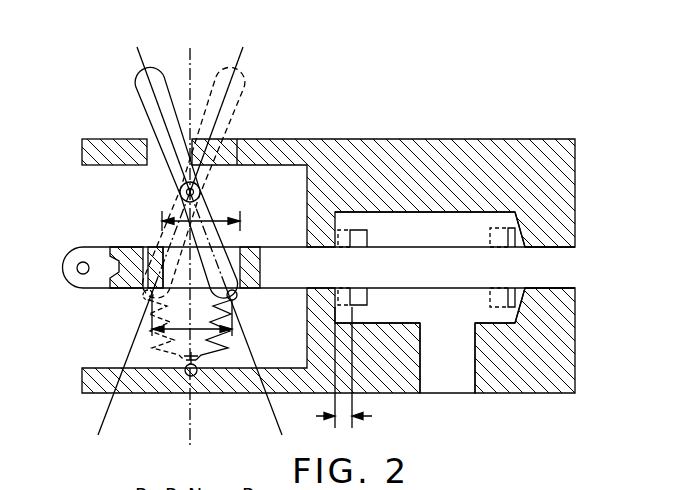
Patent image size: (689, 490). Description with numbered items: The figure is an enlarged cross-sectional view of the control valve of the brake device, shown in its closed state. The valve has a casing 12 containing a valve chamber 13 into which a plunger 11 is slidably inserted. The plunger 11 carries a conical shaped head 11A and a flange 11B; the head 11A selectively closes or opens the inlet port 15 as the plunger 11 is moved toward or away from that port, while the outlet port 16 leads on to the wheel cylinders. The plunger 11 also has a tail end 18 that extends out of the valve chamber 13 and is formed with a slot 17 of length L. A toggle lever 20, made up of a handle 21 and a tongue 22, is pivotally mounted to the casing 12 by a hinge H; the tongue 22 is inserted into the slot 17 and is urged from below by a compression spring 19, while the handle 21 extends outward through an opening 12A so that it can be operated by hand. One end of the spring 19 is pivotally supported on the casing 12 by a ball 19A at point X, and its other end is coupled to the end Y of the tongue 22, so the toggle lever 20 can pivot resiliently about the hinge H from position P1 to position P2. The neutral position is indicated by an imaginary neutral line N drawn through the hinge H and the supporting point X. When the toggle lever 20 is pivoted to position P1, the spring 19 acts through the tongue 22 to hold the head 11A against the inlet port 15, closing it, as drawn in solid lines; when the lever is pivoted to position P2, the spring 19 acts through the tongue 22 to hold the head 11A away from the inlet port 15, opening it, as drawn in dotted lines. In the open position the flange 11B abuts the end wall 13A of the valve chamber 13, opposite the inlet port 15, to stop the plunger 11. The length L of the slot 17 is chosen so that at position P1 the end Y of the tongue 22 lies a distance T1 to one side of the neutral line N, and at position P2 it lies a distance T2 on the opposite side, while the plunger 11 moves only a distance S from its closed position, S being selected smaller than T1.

The plunger 11 is at (433, 253).
The conical shaped head 11A is at (533, 262).
The flange 11B is at (366, 224).
The casing 12 is at (536, 152).
The opening 12A is at (240, 152).
The valve chamber 13 is at (478, 222).
The end wall 13A is at (337, 220).
The inlet port 15 is at (562, 279).
The outlet port 16 is at (456, 386).
The slot 17 is at (177, 260).
The tail end 18 is at (92, 284).
The compression spring 19 is at (210, 352).
The ball 19A is at (197, 378).
The toggle lever 20 is at (124, 95).
The handle 21 is at (146, 117).
The tongue 22 is at (206, 199).
The hinge H is at (180, 193).
The length of slot L is at (241, 221).
The neutral line N is at (190, 234).
The position P1 is at (205, 227).
The position P2 is at (182, 227).
The plunger travel distance S is at (344, 367).
The distance T1 is at (236, 327).
The distance T2 is at (150, 329).
The supporting point X is at (200, 364).
The end of tongue Y is at (238, 295).